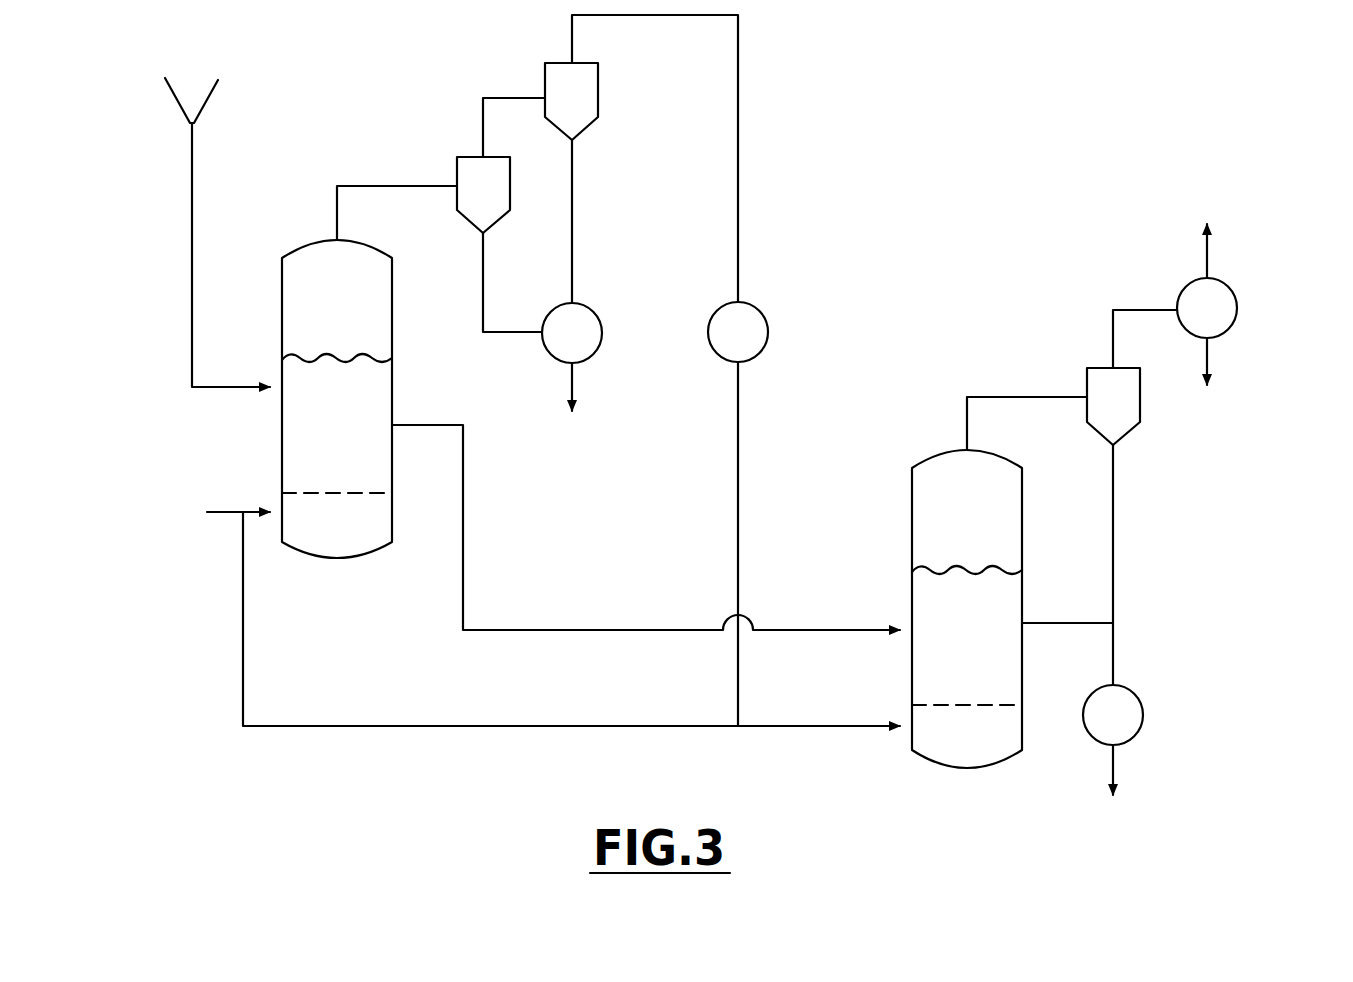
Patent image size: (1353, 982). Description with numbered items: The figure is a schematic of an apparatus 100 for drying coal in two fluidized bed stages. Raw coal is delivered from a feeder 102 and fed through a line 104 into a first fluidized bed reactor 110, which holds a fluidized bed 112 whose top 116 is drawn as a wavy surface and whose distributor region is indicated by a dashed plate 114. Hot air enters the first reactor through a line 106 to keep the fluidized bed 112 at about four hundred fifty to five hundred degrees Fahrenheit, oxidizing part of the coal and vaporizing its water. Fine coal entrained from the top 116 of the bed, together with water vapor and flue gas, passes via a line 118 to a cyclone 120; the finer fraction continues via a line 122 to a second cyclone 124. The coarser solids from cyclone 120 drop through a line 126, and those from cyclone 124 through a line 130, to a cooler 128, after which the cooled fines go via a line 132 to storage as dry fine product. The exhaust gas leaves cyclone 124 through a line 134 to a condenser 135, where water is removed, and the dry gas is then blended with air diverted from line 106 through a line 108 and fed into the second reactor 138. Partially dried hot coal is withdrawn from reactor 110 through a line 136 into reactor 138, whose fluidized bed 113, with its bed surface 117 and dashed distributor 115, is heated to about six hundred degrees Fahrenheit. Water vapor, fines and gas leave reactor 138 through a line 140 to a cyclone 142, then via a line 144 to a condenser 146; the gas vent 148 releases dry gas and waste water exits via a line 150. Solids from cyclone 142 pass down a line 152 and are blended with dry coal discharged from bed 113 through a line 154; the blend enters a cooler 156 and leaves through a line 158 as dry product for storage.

The apparatus 100 is at (883, 120).
The feeder 102 is at (210, 96).
The line 104 is at (190, 258).
The line 106 is at (228, 513).
The line 108 is at (243, 676).
The first fluidized bed reactor 110 is at (308, 243).
The fluidized bed 112 is at (355, 539).
The fluidized bed 113 is at (988, 749).
The stage I distributor plate 114 is at (372, 492).
The stage II distributor plate 115 is at (990, 705).
The top of the fluidized bed 116 is at (305, 355).
The stage II fluidized bed level 117 is at (990, 565).
The line 118 is at (410, 186).
The cyclone 120 is at (475, 228).
The line 122 is at (510, 97).
The cyclone 124 is at (598, 83).
The fines line from first cyclone 126 is at (483, 283).
The cooler 128 is at (598, 322).
The fines line from second cyclone 130 is at (572, 232).
The storage 132 is at (570, 380).
The line 134 is at (738, 190).
The condenser 135 is at (768, 330).
The line 136 is at (467, 587).
The reactor 138 is at (912, 535).
The line 140 is at (1030, 397).
The cyclone 142 is at (1093, 422).
The line 144 is at (1143, 308).
The condenser 146 is at (1240, 318).
The gas vent outlet 148 is at (1205, 258).
The line 150 is at (1210, 355).
The line 152 is at (1122, 545).
The line 154 is at (1087, 623).
The cooler 156 is at (1143, 705).
The line 158 is at (1115, 765).